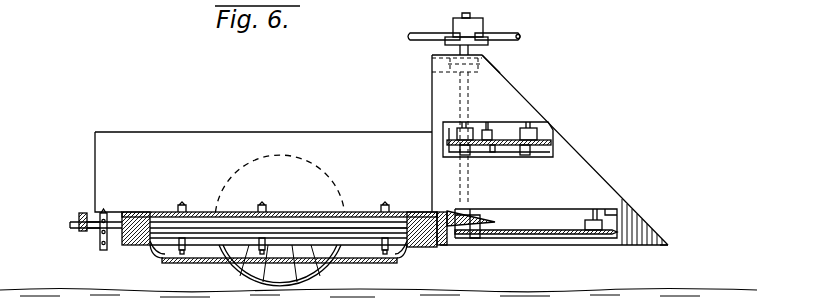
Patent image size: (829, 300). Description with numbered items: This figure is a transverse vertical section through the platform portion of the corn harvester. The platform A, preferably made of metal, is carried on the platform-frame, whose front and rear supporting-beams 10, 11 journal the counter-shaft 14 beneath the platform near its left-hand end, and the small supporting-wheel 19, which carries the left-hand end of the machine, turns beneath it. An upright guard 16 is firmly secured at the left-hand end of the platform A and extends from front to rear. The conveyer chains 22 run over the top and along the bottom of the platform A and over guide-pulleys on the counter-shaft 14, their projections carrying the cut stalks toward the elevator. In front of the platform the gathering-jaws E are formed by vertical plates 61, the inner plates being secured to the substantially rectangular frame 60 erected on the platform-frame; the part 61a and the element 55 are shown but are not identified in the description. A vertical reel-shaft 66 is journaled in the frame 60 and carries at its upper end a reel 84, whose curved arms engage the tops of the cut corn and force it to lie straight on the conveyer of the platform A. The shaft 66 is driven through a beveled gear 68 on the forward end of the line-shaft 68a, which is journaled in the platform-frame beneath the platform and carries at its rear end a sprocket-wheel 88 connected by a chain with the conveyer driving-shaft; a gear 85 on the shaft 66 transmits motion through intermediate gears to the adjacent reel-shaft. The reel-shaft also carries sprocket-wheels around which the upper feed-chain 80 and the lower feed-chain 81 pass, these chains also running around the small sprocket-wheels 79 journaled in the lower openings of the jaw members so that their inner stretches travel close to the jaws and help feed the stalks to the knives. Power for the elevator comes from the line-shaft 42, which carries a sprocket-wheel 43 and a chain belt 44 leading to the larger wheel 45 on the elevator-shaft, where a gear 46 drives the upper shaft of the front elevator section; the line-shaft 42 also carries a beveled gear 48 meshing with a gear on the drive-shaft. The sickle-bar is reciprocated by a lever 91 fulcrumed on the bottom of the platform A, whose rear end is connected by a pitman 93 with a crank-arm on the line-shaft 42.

The upright guard 16 is at (263, 172).
The rectangular frame 60 is at (432, 55).
The vertical reel-shaft 66 is at (470, 15).
The reel 84 is at (448, 36).
The gear 85 is at (492, 69).
The chain belt 44 is at (515, 122).
The gathering-jaws E is at (440, 91).
The line-shaft 42 is at (461, 146).
The endless feed-chain 80 is at (508, 148).
The gear 46 is at (475, 126).
The beveled gear 48 is at (495, 150).
The vertical plates 61 is at (519, 203).
The sprocket-wheel 45 is at (535, 209).
The second feed-chain 81 is at (560, 238).
The sprocket-wheels 79 is at (602, 238).
The frame plate end 61a is at (668, 245).
The sprocket-wheel 43 is at (468, 243).
The gear 68 is at (452, 244).
The counter-shaft 14 is at (366, 241).
The supporting-wheel 19 is at (346, 236).
The rear supporting-beam 11 is at (141, 231).
The front supporting-beam 10 is at (418, 247).
The conveyer chains 22 is at (389, 209).
The wheel 55 is at (226, 263).
The line-shaft 68a is at (165, 233).
The lever 91 is at (79, 222).
The pitman 93 is at (83, 229).
The sprocket-wheel 88 is at (101, 241).
The platform A is at (338, 214).